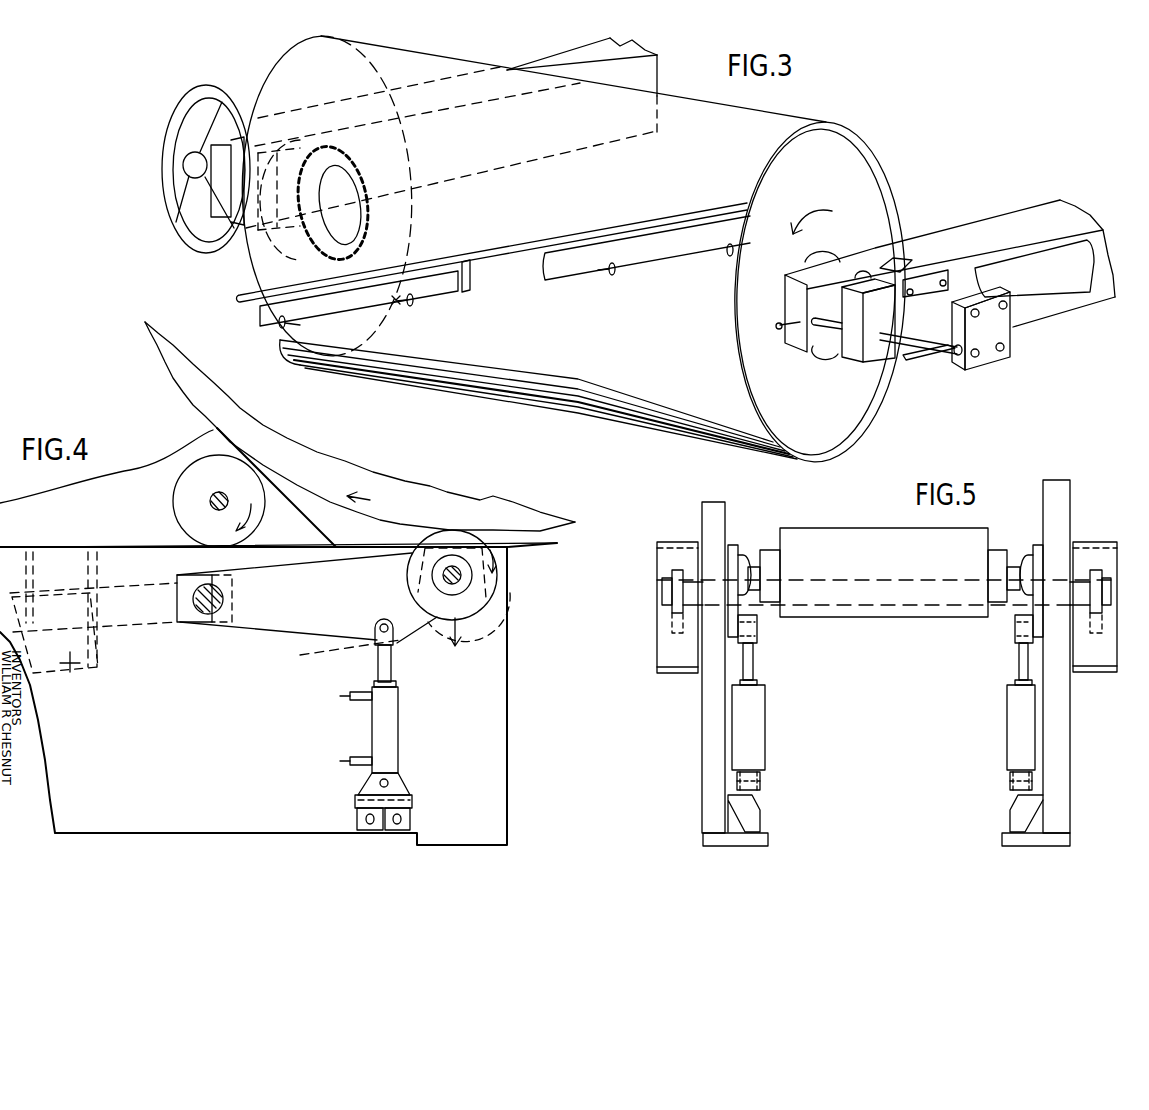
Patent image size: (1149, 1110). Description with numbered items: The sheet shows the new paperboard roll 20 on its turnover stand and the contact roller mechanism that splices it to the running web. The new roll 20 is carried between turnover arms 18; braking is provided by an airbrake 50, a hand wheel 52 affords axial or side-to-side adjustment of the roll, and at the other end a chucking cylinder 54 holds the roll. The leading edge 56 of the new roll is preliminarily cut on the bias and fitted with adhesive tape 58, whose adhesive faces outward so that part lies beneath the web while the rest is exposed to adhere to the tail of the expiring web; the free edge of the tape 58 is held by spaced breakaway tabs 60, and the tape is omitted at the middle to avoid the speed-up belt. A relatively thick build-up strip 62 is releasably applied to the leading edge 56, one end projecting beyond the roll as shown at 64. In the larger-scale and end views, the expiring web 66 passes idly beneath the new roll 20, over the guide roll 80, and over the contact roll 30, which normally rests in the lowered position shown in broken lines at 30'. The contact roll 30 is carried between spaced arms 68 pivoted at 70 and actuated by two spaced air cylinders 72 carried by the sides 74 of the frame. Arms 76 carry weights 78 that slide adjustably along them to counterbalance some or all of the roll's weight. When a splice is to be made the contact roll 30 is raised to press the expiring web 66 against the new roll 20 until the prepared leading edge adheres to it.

In FIG. 3, the turnover arms 18 is at (540, 70).
In FIG. 3, the new paperboard roll 20 is at (778, 121).
In FIG. 4, the new paperboard roll 20 is at (368, 472).
In FIG. 4, the contact roll 30 is at (476, 575).
In FIG. 5, the contact roll 30 is at (887, 559).
In FIG. 4, the contact roll lowered position 30' is at (487, 597).
In FIG. 3, the airbrake 50 is at (252, 130).
In FIG. 3, the hand wheel 52 is at (178, 115).
In FIG. 3, the chucking cylinder 54 is at (940, 358).
In FIG. 3, the leading edge 56 is at (510, 264).
In FIG. 3, the adhesive tape 58 is at (394, 298).
In FIG. 3, the breakaway tabs 60 is at (300, 325).
In FIG. 3, the build-up strip 62 is at (458, 262).
In FIG. 3, the projecting end of build-up strip 64 is at (245, 303).
In FIG. 4, the expiring web 66 is at (527, 548).
In FIG. 4, the spaced arms 68 is at (272, 623).
In FIG. 5, the spaced arms 68 is at (735, 545).
In FIG. 4, the pivot 70 is at (212, 615).
In FIG. 5, the pivot 70 is at (662, 590).
In FIG. 4, the air cylinders 72 is at (395, 727).
In FIG. 5, the air cylinders 72 is at (765, 727).
In FIG. 4, the frame sides 74 is at (497, 783).
In FIG. 5, the frame sides 74 is at (712, 742).
In FIG. 4, the counterbalance arms 76 is at (118, 630).
In FIG. 5, the counterbalance arms 76 is at (676, 605).
In FIG. 4, the weights 78 is at (72, 676).
In FIG. 5, the weights 78 is at (662, 660).
In FIG. 4, the guide roll 80 is at (185, 488).